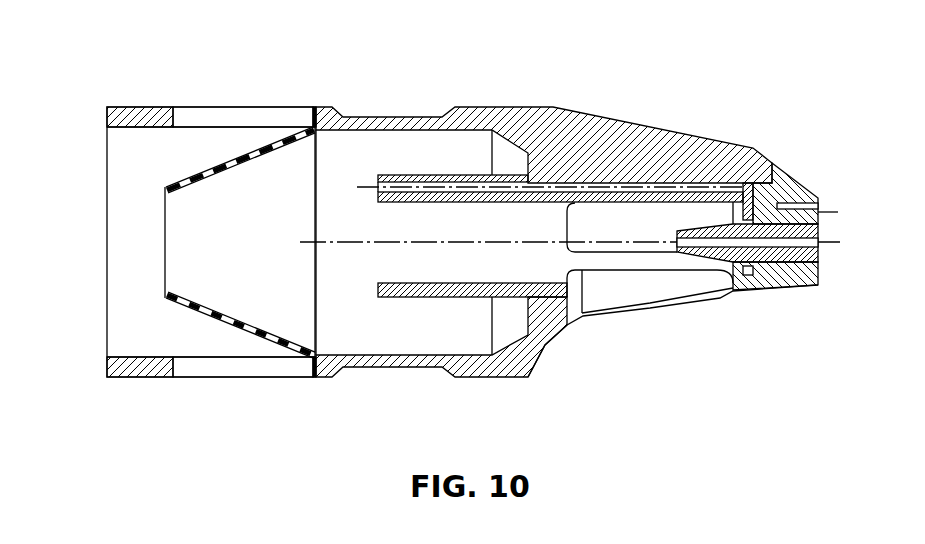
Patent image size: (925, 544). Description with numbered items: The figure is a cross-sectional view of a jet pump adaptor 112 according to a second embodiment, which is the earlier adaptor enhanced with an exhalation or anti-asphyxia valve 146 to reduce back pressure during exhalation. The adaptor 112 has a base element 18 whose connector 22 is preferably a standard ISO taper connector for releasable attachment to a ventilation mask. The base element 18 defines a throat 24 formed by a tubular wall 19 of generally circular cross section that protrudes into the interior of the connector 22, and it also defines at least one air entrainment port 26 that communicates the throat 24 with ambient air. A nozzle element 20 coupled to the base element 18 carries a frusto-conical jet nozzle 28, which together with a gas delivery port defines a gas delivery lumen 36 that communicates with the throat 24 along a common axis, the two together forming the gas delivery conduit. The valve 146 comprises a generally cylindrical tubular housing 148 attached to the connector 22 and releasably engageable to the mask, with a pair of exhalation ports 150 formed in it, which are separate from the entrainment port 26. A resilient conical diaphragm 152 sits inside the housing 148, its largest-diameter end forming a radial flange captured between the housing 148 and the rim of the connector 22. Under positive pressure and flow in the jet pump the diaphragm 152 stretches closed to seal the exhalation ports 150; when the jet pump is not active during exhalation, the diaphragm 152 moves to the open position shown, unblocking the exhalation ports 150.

The base element 18 is at (463, 233).
The tubular wall 19 is at (388, 298).
The nozzle element 20 is at (805, 157).
The connector 22 is at (375, 120).
The throat 24 is at (431, 271).
The air entrainment port 26 is at (655, 283).
The jet nozzle 28 is at (694, 215).
The gas delivery lumen 36 is at (818, 244).
The adaptor 112 is at (665, 83).
The anti-asphyxia valve 146 is at (140, 88).
The tubular housing 148 is at (119, 378).
The exhalation ports 150 is at (252, 115).
The conical diaphragm 152 is at (197, 180).